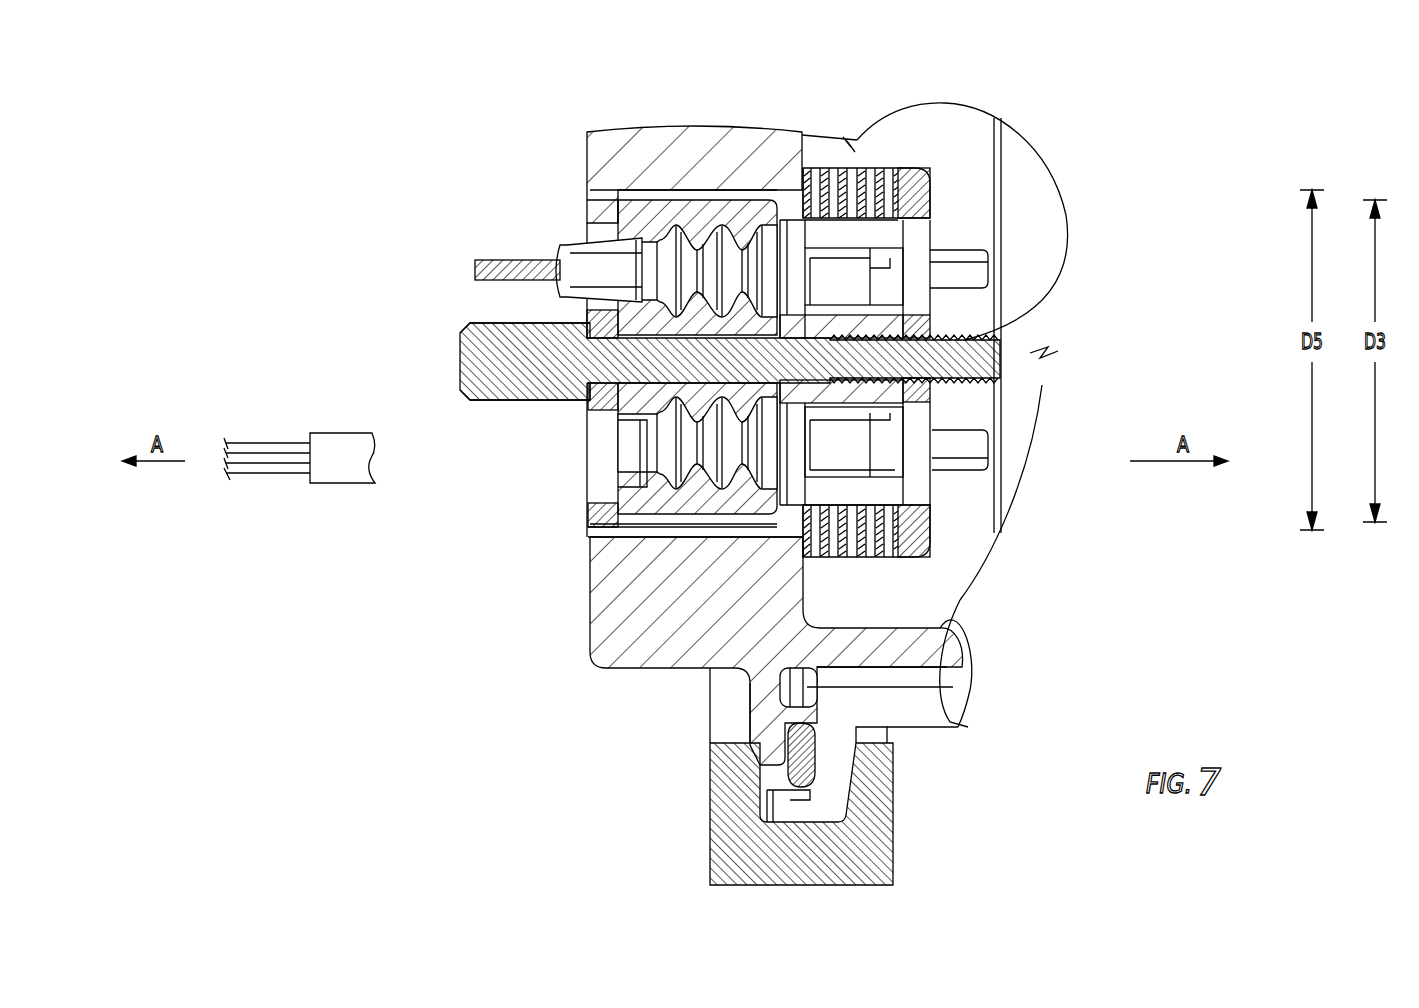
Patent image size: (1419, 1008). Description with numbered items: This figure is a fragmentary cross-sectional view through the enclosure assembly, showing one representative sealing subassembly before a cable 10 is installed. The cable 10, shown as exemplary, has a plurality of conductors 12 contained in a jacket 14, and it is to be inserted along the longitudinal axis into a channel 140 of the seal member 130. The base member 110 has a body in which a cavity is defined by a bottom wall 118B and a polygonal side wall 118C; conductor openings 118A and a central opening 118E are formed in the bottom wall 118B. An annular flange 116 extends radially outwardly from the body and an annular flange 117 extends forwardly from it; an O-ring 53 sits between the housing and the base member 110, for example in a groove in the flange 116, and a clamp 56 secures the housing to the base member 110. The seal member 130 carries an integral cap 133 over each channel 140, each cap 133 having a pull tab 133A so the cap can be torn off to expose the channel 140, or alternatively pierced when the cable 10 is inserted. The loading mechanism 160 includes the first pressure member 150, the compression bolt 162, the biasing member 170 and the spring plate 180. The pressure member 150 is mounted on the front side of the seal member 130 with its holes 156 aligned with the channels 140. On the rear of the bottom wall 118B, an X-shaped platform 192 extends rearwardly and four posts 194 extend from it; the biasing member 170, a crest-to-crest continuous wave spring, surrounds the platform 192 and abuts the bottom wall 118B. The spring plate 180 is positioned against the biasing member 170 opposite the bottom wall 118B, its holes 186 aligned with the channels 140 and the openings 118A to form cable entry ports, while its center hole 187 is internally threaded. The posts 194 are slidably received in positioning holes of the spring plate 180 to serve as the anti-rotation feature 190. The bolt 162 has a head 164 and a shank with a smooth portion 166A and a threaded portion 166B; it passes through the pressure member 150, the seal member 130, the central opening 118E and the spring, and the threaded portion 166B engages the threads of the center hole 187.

The cable 10 is at (325, 488).
The conductors 12 is at (264, 468).
The jacket 14 is at (345, 472).
The O-ring 53 is at (810, 758).
The clamp 56 is at (868, 858).
The base member 110 is at (705, 128).
The annular flange 116 is at (758, 722).
The annular flange 117 is at (953, 625).
The conductor openings 118A is at (790, 478).
The bottom wall 118B is at (775, 495).
The side wall 118C is at (635, 190).
The central opening 118E is at (812, 275).
The seal member 130 is at (660, 485).
The cap 133 is at (571, 245).
The pull tab 133A is at (500, 262).
The channels 140 is at (782, 207).
The first pressure member 150 is at (588, 215).
The holes 156 is at (590, 525).
The loading mechanism 160 is at (394, 130).
The compression bolt 162 is at (447, 355).
The head 164 is at (655, 362).
The smooth portion 166A is at (590, 384).
The threaded portion 166B is at (968, 340).
The biasing member 170 is at (872, 560).
The spring plate 180 is at (925, 168).
The holes 186 is at (917, 470).
The center hole 187 is at (932, 318).
The anti-rotation feature 190 is at (972, 488).
The platform 192 is at (833, 262).
The posts 194 is at (941, 250).